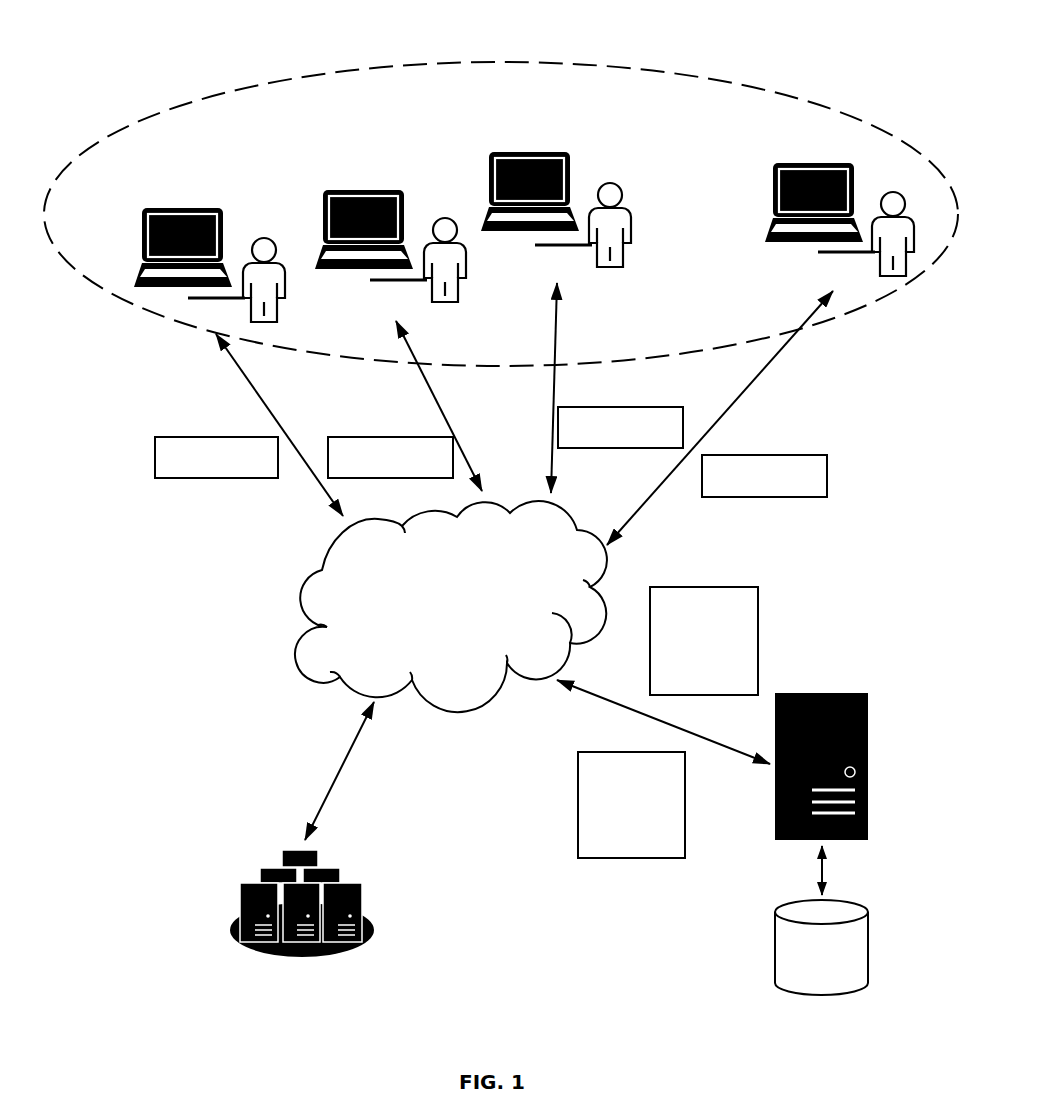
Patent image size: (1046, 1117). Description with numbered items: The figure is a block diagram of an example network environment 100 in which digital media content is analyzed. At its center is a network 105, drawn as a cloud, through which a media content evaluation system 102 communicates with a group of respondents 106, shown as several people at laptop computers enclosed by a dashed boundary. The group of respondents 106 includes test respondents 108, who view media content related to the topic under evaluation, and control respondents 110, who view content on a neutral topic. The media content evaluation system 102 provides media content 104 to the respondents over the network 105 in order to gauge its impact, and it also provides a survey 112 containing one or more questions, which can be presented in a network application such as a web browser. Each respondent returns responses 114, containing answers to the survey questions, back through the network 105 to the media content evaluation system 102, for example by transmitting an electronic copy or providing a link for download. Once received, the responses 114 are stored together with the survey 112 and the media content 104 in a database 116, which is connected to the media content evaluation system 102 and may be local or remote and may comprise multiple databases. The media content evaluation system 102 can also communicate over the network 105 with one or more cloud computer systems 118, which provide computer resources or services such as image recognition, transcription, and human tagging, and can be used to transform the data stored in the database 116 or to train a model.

The network environment 100 is at (109, 691).
The media content evaluation system 102 is at (883, 709).
The media content 104 is at (692, 821).
The network 105 is at (280, 589).
The group of respondents 106 is at (216, 71).
The test respondents 108 is at (130, 244).
The control respondents 110 is at (478, 172).
The survey 112 is at (775, 617).
The responses 114 is at (148, 452).
The database 116 is at (760, 953).
The cloud computer systems 118 is at (217, 910).